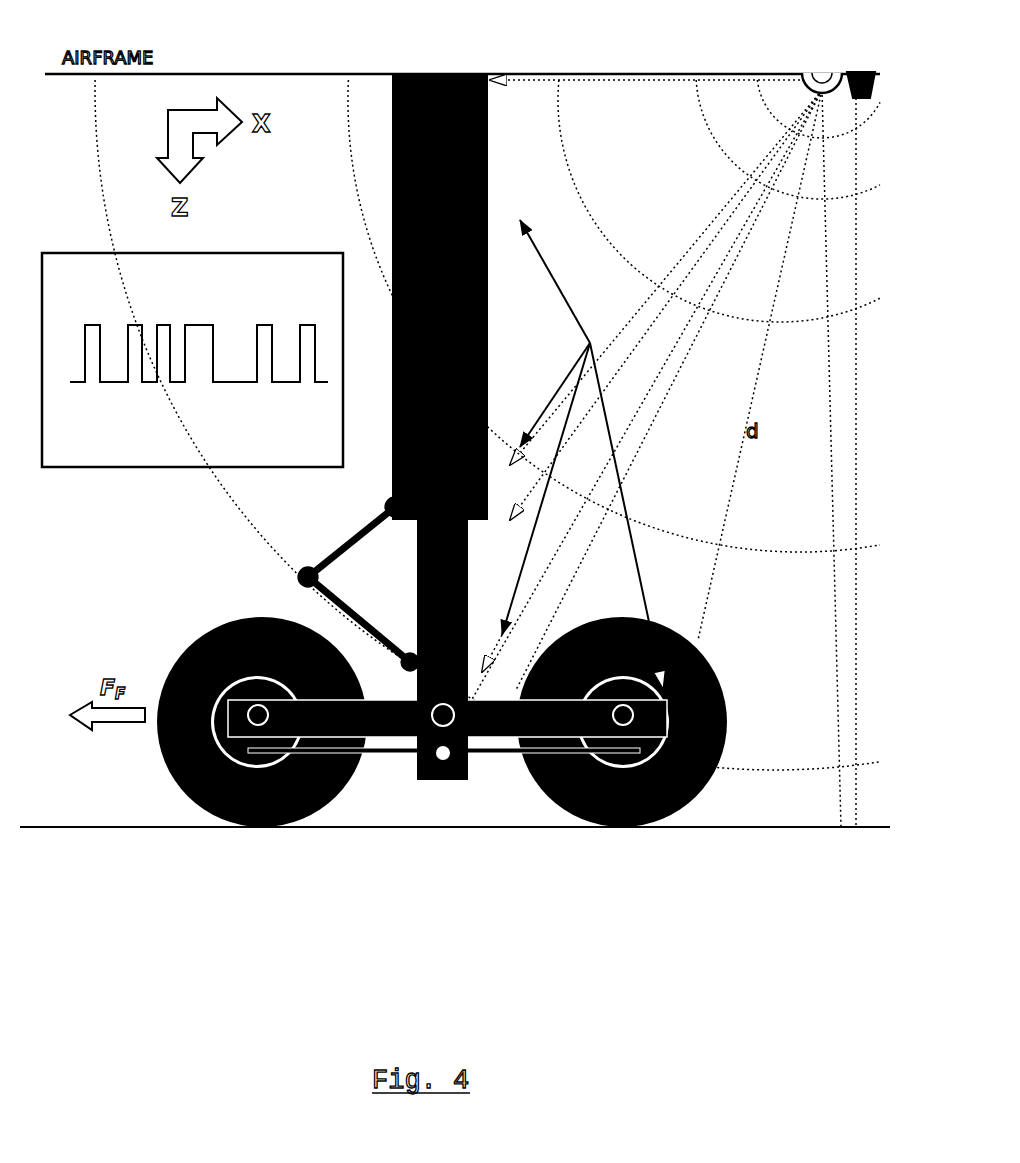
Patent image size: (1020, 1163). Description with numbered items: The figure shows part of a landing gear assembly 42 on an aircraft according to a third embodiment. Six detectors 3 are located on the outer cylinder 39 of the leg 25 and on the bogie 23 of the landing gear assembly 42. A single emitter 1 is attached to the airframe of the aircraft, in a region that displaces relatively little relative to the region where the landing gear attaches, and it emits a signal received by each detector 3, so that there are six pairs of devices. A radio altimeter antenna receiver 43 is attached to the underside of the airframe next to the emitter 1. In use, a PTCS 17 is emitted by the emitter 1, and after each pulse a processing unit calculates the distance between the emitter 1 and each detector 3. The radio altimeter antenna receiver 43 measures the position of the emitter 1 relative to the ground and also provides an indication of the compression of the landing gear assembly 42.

The emitter 1 is at (806, 53).
The radio altimeter antenna receiver 43 is at (858, 72).
The outer cylinder 39 is at (391, 138).
The landing gear assembly 42 is at (355, 213).
The detectors 3 is at (582, 454).
The PTCS 17 is at (72, 487).
The leg 25 is at (417, 608).
The bogie 23 is at (385, 720).